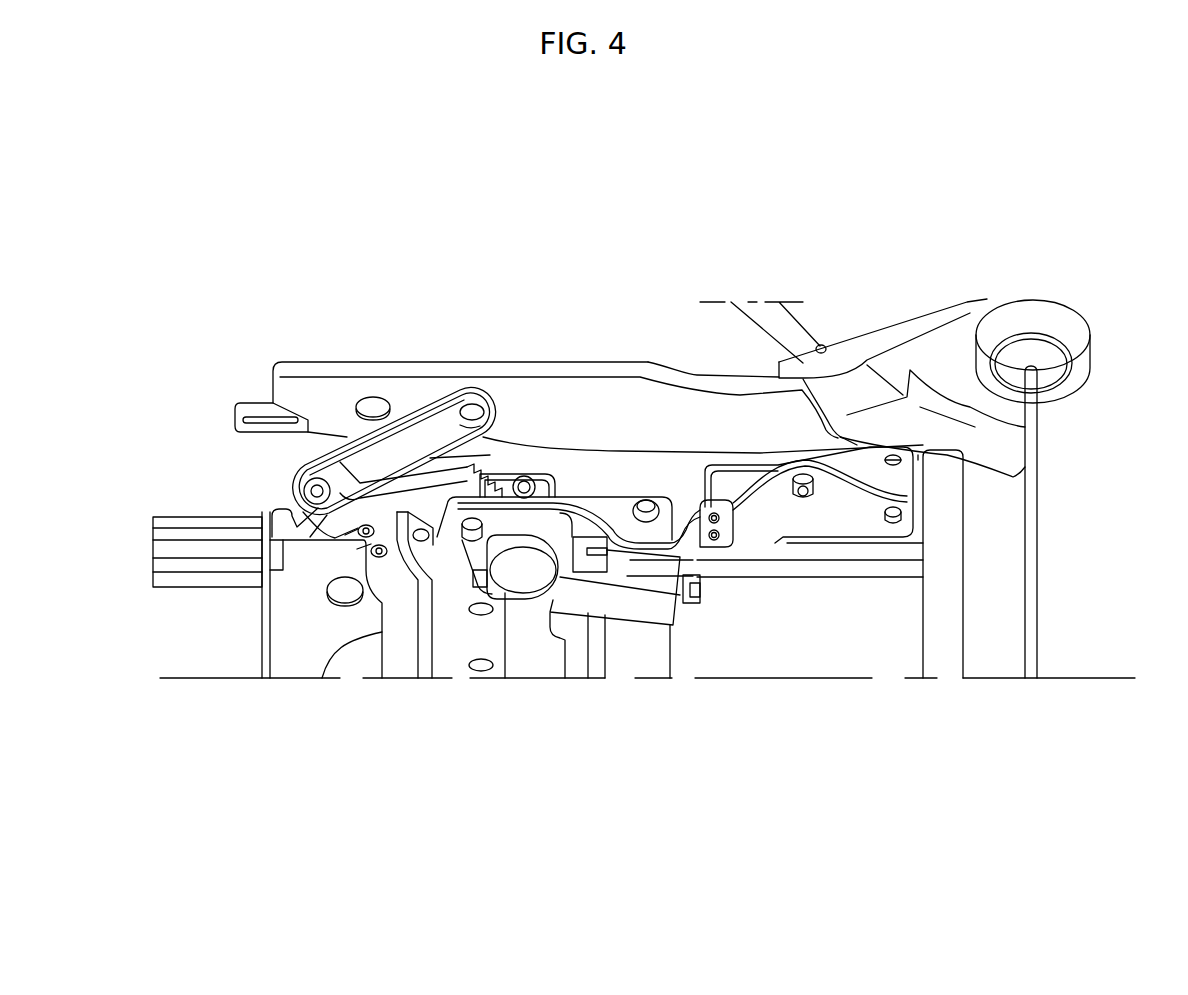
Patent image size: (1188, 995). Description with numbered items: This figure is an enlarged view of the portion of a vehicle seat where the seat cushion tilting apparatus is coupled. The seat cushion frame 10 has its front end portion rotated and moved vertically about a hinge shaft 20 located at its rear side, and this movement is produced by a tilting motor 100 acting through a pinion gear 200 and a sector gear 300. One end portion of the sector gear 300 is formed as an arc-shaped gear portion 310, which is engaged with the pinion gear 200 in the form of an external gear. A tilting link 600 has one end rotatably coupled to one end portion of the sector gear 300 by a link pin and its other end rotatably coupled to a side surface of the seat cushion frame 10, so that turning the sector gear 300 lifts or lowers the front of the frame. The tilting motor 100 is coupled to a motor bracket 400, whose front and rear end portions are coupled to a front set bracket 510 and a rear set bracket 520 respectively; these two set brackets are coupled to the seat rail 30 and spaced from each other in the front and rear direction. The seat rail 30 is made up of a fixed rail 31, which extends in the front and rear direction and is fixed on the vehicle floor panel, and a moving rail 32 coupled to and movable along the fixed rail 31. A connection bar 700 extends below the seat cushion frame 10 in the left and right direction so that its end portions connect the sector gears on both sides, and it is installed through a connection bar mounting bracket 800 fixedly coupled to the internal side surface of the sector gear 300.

The seat cushion frame 10 is at (460, 372).
The hinge shaft 20 is at (947, 607).
The seat rail 30 is at (150, 511).
The fixed rail 31 is at (190, 520).
The moving rail 32 is at (680, 517).
The tilting motor 100 is at (632, 607).
The pinion gear 200 is at (527, 487).
The sector gear 300 is at (353, 483).
The gear portion 310 is at (497, 477).
The motor bracket 400 is at (624, 543).
The front set bracket 510 is at (313, 520).
The rear set bracket 520 is at (832, 518).
The tilting link 600 is at (425, 443).
The connection bar 700 is at (402, 643).
The connection bar mounting bracket 800 is at (425, 545).